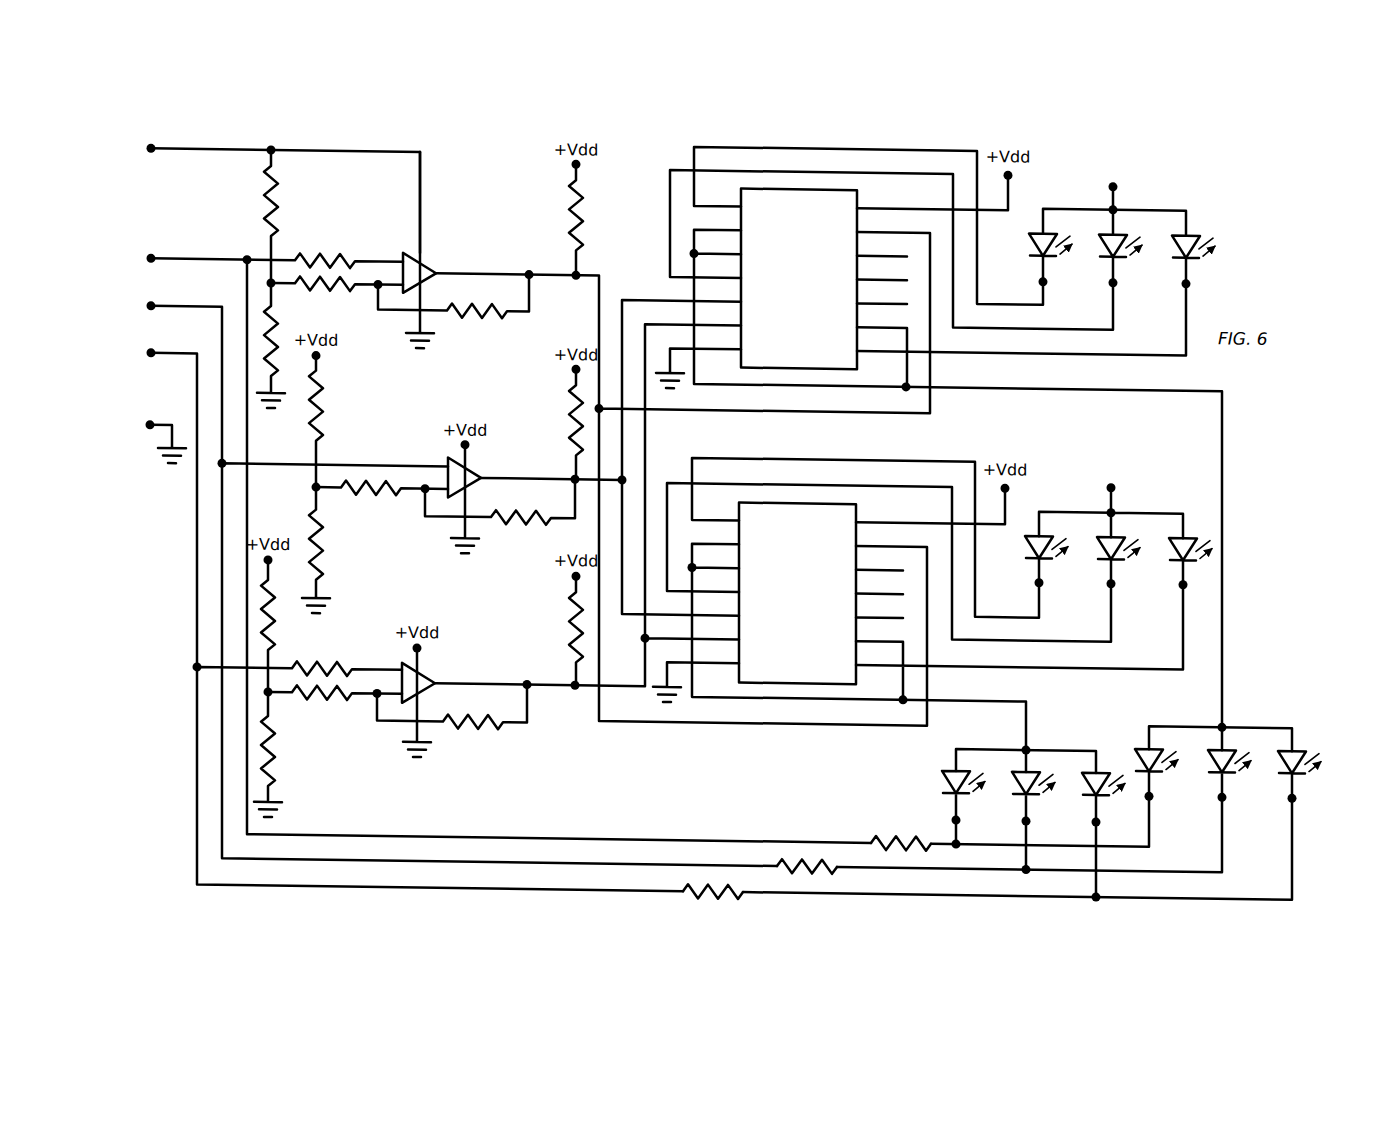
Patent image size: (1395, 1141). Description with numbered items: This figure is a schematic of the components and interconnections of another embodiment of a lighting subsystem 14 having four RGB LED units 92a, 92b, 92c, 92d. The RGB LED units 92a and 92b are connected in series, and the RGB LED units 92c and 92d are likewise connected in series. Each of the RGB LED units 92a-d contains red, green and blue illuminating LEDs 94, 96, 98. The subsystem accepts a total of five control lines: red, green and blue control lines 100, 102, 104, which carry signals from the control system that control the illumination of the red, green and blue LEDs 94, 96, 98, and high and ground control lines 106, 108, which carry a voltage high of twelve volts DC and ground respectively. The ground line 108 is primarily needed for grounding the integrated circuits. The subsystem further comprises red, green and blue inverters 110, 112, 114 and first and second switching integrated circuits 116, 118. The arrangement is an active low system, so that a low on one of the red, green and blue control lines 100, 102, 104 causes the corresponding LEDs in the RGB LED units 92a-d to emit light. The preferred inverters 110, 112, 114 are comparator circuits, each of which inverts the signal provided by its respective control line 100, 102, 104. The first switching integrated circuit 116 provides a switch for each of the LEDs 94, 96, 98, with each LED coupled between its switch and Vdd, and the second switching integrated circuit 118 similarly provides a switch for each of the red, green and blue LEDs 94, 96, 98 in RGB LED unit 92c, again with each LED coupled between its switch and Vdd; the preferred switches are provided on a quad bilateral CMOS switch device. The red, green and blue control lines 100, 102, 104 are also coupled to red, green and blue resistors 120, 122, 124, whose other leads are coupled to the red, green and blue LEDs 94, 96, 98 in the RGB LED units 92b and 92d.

The lighting subsystem 14 is at (510, 182).
The RGB LED unit 92a is at (1138, 230).
The RGB LED unit 92b is at (1136, 712).
The RGB LED unit 92c is at (1249, 466).
The RGB LED unit 92d is at (925, 755).
The red illuminating LED 94 is at (1025, 239).
The green illuminating LED 96 is at (1095, 239).
The blue illuminating LED 98 is at (1168, 239).
The red control line 100 is at (156, 257).
The green control line 102 is at (155, 314).
The blue control line 104 is at (155, 362).
The high control line 106 is at (153, 158).
The ground control line 108 is at (147, 436).
The red inverter 110 is at (426, 270).
The green inverter 112 is at (470, 464).
The blue inverter 114 is at (427, 680).
The first switching integrated circuit 116 is at (778, 367).
The second switching integrated circuit 118 is at (775, 682).
The red resistor 120 is at (910, 832).
The green resistor 122 is at (812, 855).
The blue resistor 124 is at (721, 878).